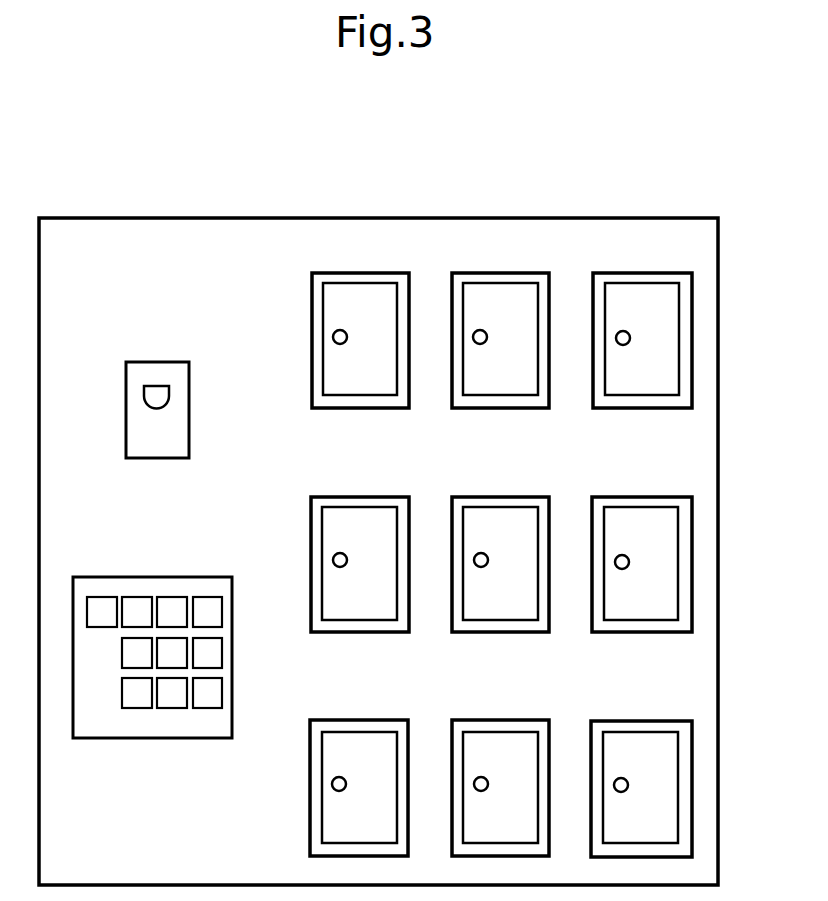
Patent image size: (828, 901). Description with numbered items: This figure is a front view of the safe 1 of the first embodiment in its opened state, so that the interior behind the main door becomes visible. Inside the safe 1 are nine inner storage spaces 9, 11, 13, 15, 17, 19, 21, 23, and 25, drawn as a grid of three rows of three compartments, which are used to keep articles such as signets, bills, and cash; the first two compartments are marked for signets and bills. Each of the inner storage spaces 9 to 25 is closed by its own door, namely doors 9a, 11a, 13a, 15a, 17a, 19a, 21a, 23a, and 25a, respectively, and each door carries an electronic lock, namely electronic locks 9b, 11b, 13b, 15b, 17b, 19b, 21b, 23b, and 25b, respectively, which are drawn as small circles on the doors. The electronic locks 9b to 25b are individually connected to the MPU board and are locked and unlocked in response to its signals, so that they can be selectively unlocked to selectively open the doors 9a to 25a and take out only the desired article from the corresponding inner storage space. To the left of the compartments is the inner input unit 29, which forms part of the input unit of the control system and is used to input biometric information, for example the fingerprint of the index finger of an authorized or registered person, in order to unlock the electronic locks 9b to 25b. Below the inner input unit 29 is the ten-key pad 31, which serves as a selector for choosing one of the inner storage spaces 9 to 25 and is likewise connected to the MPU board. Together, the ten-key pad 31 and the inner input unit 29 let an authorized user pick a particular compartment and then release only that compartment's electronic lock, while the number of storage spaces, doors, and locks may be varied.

The safe 1 is at (222, 206).
The inner storage space 9 is at (343, 272).
The door 9a is at (323, 292).
The electronic lock 9b is at (333, 338).
The inner storage space 11 is at (524, 272).
The door 11a is at (472, 282).
The electronic lock 11b is at (473, 331).
The inner storage space 13 is at (672, 272).
The door 13a is at (622, 282).
The electronic lock 13b is at (617, 331).
The inner storage space 15 is at (322, 496).
The door 15a is at (383, 507).
The electronic lock 15b is at (333, 560).
The inner storage space 17 is at (493, 496).
The door 17a is at (523, 507).
The electronic lock 17b is at (474, 554).
The inner storage space 19 is at (627, 496).
The door 19a is at (663, 507).
The electronic lock 19b is at (615, 556).
The inner storage space 21 is at (322, 719).
The door 21a is at (383, 732).
The electronic lock 21b is at (332, 784).
The inner storage space 23 is at (493, 719).
The door 23a is at (523, 732).
The electronic lock 23b is at (474, 778).
The inner storage space 25 is at (627, 720).
The door 25a is at (663, 732).
The electronic lock 25b is at (614, 779).
The inner input unit 29 is at (168, 361).
The ten-key pad 31 is at (182, 576).